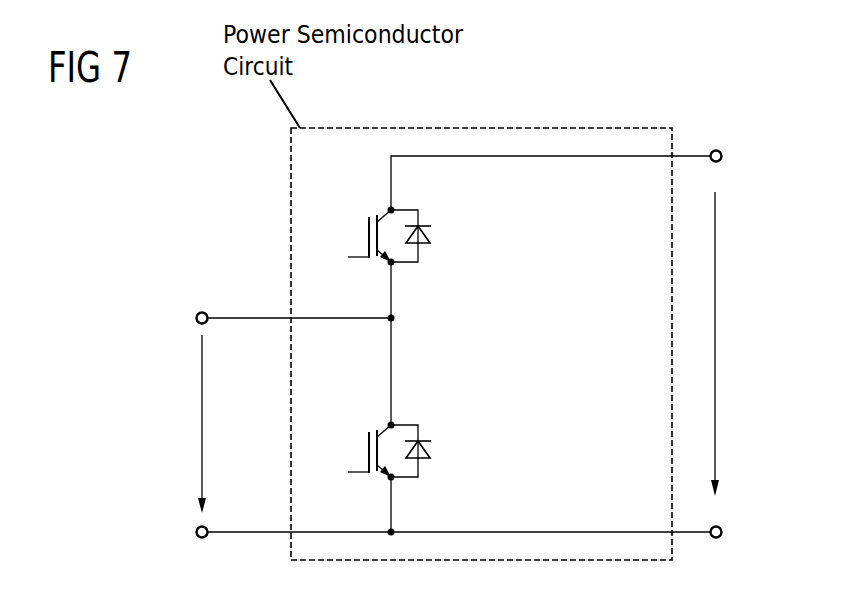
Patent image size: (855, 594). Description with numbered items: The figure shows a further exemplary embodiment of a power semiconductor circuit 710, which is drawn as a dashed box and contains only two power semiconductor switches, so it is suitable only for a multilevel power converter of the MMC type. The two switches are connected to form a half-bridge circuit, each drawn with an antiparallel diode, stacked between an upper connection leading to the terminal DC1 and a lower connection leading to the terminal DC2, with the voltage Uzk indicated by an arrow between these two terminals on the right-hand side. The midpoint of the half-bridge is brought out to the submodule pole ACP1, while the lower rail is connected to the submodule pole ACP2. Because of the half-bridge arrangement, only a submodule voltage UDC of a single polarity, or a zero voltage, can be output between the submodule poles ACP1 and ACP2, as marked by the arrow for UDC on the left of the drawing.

The power semiconductor circuit 710 is at (495, 128).
The submodule pole ACP1 is at (170, 319).
The submodule pole ACP2 is at (170, 534).
The DC terminal 1 DC1 is at (740, 157).
The DC terminal 2 DC2 is at (740, 533).
The submodule voltage UDC is at (178, 424).
The DC link voltage Uzk is at (734, 344).